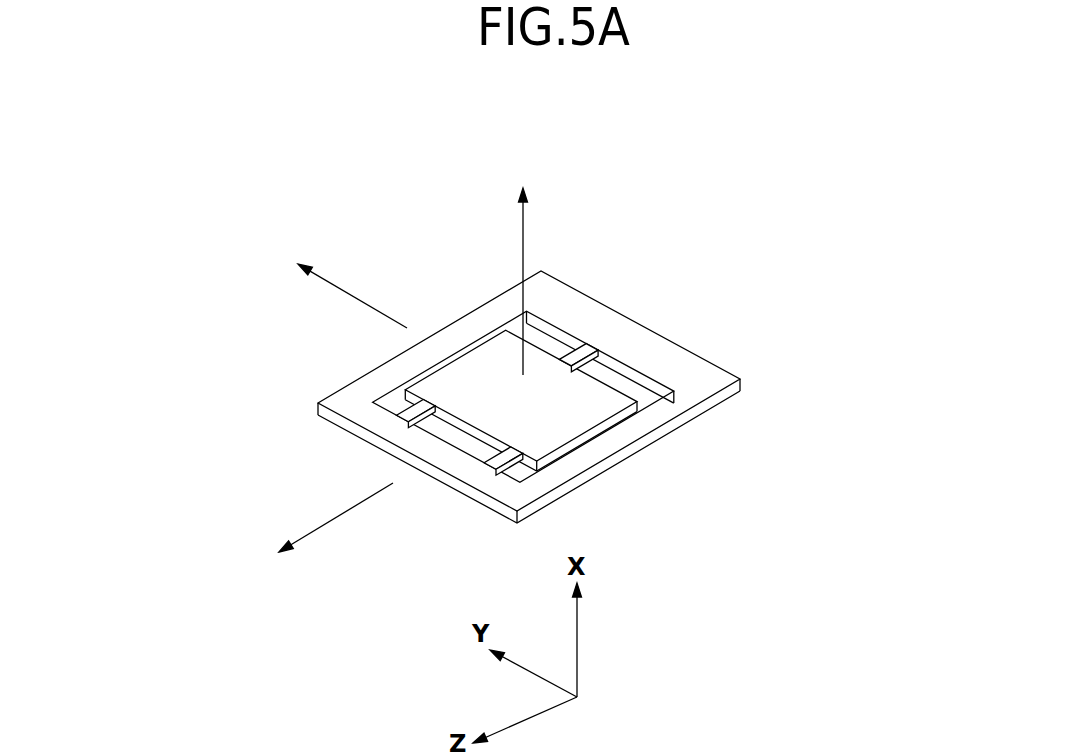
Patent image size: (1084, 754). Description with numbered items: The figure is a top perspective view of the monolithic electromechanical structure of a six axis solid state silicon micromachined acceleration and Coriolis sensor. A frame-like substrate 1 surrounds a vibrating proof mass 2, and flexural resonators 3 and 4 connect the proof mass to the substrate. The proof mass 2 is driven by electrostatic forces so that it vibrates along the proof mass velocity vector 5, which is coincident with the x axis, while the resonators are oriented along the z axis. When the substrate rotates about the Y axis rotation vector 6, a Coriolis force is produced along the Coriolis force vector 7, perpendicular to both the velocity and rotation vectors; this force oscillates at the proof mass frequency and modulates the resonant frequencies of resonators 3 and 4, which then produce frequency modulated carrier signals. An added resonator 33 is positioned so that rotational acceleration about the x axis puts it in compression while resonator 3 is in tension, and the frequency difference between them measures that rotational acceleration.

The substrate 1 is at (747, 379).
The proof mass 2 is at (568, 428).
The flexural resonator 3 is at (499, 486).
The resonator 33 is at (396, 423).
The flexural resonator 4 is at (612, 362).
The proof mass velocity vector 5 is at (615, 257).
The Y axis rotation vector 6 is at (314, 269).
The Coriolis force vector 7 is at (239, 558).